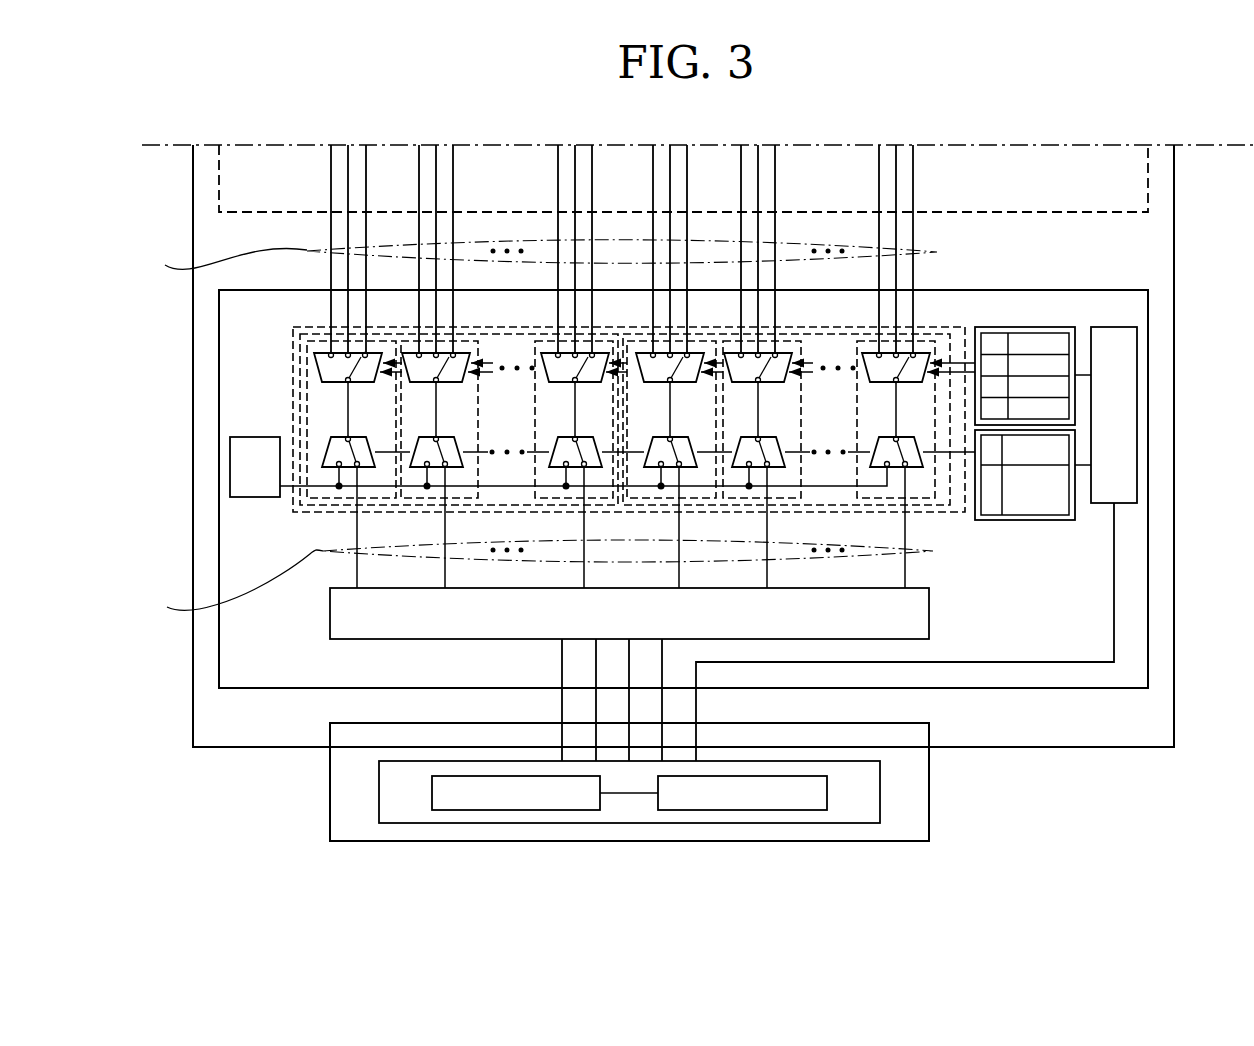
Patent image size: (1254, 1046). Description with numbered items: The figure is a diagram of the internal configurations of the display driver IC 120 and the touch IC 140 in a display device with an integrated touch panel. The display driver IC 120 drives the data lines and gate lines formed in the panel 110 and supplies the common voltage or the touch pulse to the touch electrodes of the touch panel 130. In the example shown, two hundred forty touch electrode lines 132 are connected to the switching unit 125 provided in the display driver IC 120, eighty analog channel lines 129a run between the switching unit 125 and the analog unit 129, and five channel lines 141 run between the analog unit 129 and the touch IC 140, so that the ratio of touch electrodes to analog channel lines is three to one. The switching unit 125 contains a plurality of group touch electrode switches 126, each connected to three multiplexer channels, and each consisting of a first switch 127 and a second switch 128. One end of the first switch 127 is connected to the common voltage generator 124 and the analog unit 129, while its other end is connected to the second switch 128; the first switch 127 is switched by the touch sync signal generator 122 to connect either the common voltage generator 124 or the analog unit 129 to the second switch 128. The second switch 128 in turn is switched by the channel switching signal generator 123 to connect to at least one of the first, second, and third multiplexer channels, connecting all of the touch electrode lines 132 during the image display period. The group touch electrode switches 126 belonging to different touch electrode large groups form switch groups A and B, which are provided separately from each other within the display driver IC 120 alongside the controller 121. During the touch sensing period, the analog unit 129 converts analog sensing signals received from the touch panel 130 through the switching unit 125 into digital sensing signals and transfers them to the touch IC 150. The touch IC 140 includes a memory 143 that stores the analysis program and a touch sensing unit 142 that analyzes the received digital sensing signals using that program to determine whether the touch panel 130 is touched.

The panel 110 is at (1174, 252).
The touch panel 130 is at (1148, 178).
The display driver IC 120 is at (1148, 305).
The touch electrode lines 132 is at (348, 172).
The switching unit 125 is at (293, 327).
The group touch electrode switches 126 is at (303, 357).
The switch group A is at (303, 383).
The switch group B is at (951, 338).
The second switch 128 is at (921, 352).
The first switch 127 is at (908, 467).
The common voltage generator 124 is at (255, 467).
The channel switching signal generator 123 is at (1062, 327).
The touch sync signal generator 122 is at (1043, 520).
The controller 121 is at (1114, 415).
The analog channel lines 129a is at (357, 528).
The analog unit 129 is at (629, 613).
The channel lines 141 is at (563, 705).
The touch IC 150 is at (930, 770).
The touch IC 140 is at (881, 793).
The touch sensing unit 142 is at (516, 793).
The memory 143 is at (742, 793).